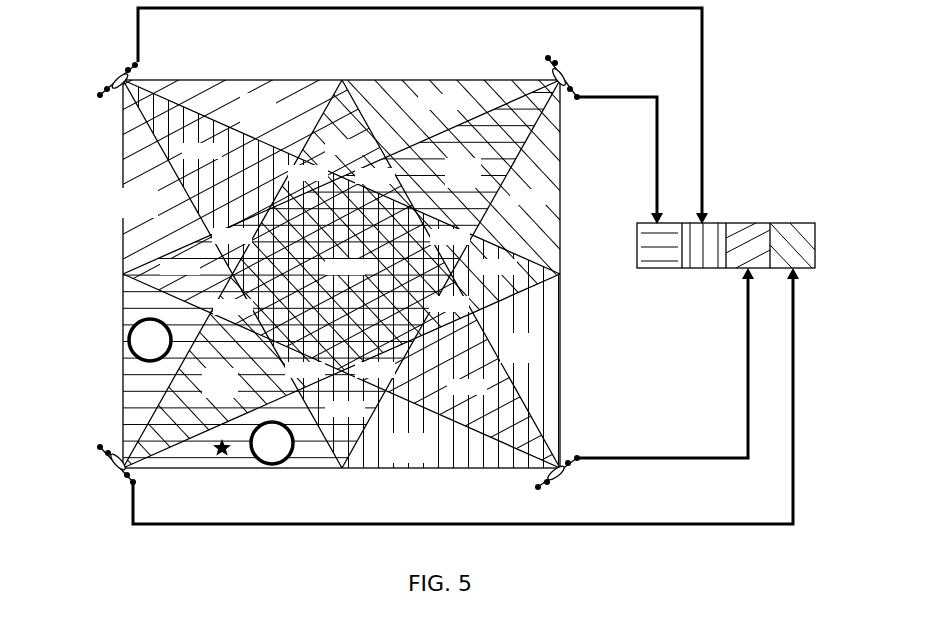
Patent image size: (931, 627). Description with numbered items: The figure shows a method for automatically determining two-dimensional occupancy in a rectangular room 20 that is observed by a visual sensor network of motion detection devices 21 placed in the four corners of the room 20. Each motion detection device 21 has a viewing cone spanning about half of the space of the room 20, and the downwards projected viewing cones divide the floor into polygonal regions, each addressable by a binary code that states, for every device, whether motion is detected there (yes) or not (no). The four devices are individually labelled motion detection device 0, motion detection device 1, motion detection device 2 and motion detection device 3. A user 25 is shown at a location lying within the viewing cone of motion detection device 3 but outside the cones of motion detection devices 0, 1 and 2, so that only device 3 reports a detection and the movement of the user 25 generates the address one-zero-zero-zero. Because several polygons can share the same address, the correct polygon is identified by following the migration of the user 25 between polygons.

The room 20 is at (385, 78).
The motion detection device 21 is at (100, 97).
The user 25 is at (225, 453).
The motion detection device 0 is at (441, 396).
The motion detection device 1 is at (665, 375).
The motion detection device 2 is at (401, 116).
The motion detection device 3 is at (620, 142).